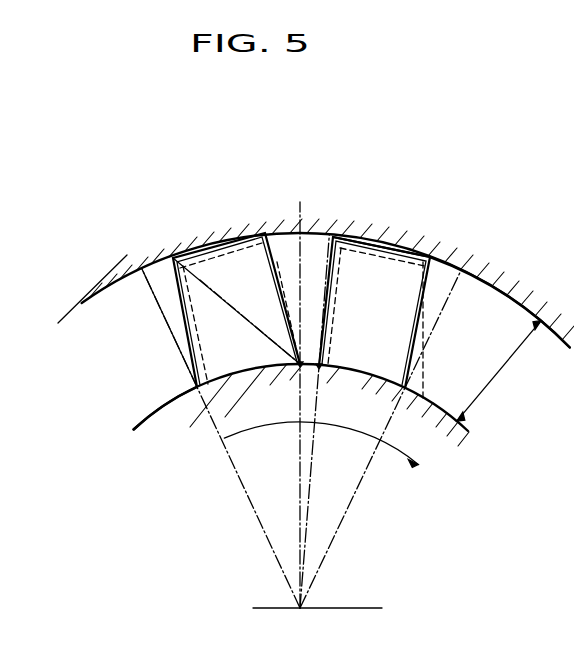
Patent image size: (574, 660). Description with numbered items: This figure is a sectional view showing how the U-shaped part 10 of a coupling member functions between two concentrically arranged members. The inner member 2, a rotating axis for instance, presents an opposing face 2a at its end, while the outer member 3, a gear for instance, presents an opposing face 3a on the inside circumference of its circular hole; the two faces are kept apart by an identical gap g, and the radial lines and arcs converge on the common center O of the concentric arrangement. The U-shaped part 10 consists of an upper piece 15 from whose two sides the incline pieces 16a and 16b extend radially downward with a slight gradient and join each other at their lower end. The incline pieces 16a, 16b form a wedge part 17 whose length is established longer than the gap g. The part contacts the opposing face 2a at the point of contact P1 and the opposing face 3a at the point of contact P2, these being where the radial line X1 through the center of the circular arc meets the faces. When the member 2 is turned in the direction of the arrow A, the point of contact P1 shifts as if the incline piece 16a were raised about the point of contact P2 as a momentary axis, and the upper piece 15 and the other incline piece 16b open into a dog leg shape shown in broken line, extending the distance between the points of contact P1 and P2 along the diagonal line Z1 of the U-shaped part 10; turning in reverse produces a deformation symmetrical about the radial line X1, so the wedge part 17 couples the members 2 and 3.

The member 2 is at (143, 441).
The opposing face 2a is at (152, 412).
The member 3 is at (98, 290).
The opposing face 3a is at (81, 308).
The U-shaped part 10 is at (440, 260).
The upper piece 15 is at (390, 246).
The incline piece 16a is at (183, 328).
The incline piece 16b is at (460, 332).
The wedge part 17 is at (165, 306).
The radial line X1 is at (300, 207).
The diagonal line Z1 is at (201, 280).
The point of contact P1 is at (309, 389).
The point of contact P2 is at (170, 255).
The rotation direction A is at (228, 446).
The gap g is at (492, 380).
The center O is at (317, 623).